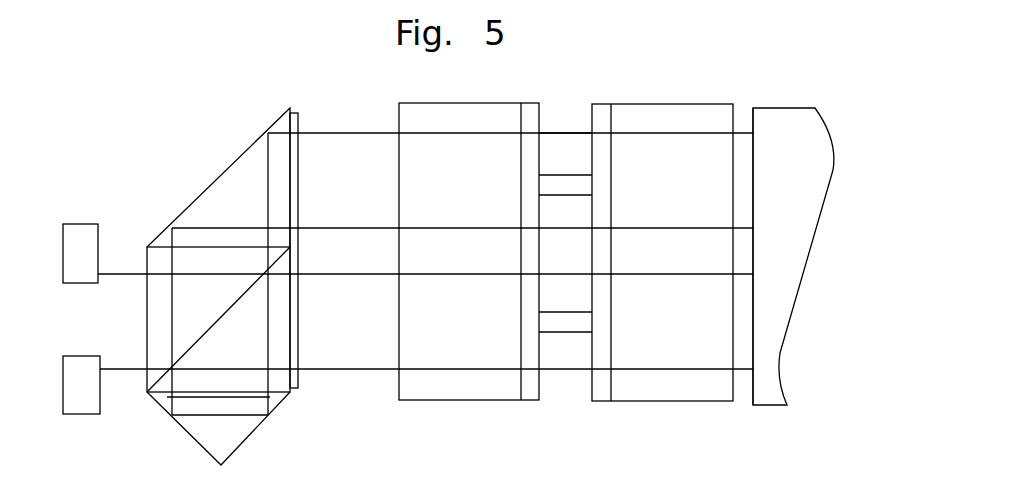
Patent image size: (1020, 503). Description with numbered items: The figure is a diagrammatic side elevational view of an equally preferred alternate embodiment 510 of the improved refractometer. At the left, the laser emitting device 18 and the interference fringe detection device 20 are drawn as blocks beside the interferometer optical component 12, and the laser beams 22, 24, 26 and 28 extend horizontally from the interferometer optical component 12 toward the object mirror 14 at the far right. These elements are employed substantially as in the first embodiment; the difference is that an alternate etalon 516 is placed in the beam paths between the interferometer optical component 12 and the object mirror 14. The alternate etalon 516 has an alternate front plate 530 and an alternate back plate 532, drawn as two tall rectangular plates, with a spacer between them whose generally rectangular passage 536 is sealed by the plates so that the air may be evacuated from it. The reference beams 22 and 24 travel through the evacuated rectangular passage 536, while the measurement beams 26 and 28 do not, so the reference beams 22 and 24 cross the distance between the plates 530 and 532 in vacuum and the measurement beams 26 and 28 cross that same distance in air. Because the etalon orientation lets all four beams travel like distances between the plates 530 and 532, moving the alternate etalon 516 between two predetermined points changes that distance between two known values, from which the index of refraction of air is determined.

The interferometer optical component 12 is at (210, 185).
The object mirror 14 is at (793, 256).
The laser emitting device 18 is at (80, 253).
The interference fringe detection device 20 is at (81, 385).
The reference beam 22 is at (350, 228).
The reference beam 24 is at (377, 276).
The measurement beam 26 is at (327, 133).
The measurement beam 28 is at (340, 369).
The alternate embodiment of the improved refractometer 510 is at (781, 78).
The alternate etalon 516 is at (551, 118).
The alternate front plate 530 is at (468, 383).
The alternate back plate 532 is at (678, 383).
The rectangular passage 536 is at (565, 253).